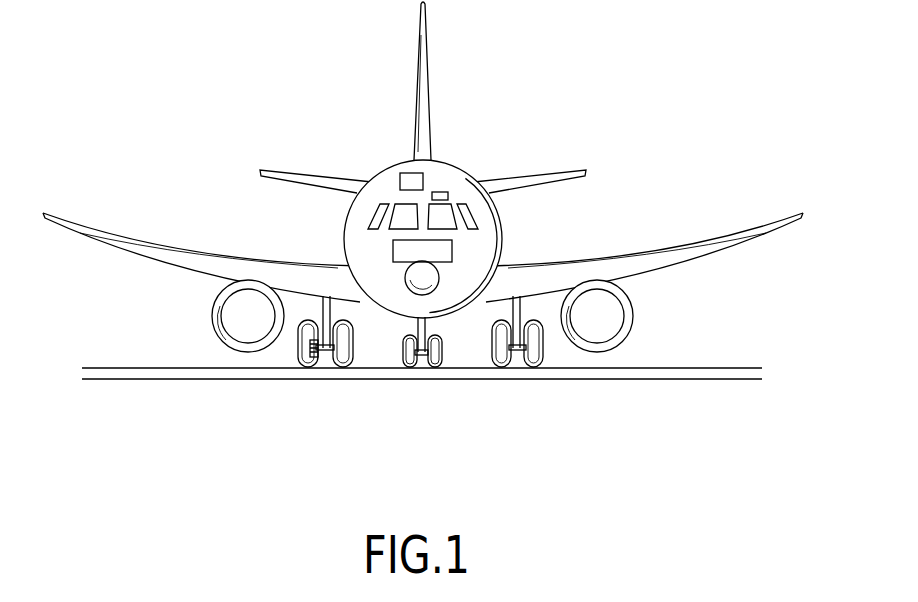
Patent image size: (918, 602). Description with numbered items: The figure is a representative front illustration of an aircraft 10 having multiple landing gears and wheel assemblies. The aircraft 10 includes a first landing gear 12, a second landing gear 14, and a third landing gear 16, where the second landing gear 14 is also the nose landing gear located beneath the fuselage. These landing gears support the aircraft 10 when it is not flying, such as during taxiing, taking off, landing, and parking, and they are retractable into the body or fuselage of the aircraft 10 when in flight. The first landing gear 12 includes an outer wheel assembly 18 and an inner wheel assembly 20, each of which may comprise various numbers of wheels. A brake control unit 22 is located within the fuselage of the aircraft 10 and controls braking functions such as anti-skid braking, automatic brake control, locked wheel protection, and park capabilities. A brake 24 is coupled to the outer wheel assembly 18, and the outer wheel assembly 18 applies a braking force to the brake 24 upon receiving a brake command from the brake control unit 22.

The aircraft 10 is at (533, 123).
The first landing gear 12 is at (268, 381).
The second landing gear 14 is at (398, 348).
The third landing gear 16 is at (486, 345).
The outer wheel assembly 18 is at (302, 360).
The inner wheel assembly 20 is at (340, 364).
The brake control unit (BCU) 22 is at (452, 249).
The brake 24 is at (313, 357).